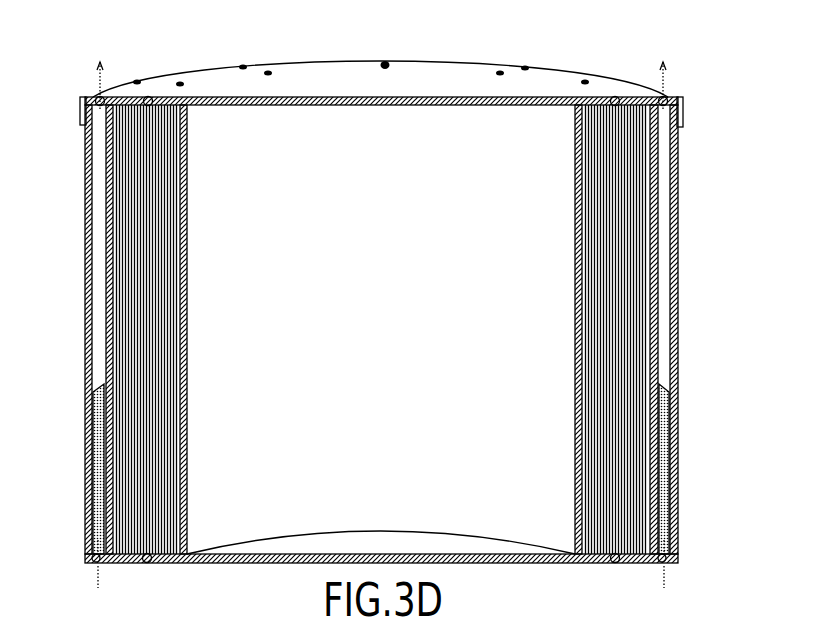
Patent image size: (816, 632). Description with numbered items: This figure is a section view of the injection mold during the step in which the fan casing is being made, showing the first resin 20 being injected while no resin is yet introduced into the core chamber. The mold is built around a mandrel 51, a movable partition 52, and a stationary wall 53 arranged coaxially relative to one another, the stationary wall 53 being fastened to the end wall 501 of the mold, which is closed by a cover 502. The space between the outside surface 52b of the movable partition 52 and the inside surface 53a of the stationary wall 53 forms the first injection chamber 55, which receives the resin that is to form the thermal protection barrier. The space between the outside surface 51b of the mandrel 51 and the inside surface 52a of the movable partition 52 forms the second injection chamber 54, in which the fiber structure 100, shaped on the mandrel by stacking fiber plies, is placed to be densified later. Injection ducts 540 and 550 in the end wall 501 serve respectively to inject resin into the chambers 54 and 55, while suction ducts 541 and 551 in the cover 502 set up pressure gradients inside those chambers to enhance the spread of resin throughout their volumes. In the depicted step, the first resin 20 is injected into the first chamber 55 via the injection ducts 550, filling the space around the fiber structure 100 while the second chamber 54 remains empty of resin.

The first resin 20 is at (100, 470).
The mandrel 51 is at (258, 527).
The outside surface of the mandrel 51b is at (167, 242).
The movable partition 52 is at (655, 192).
The inside surface of the movable partition 52a is at (120, 190).
The outside surface of the movable partition 52b is at (662, 133).
The stationary wall 53 is at (676, 366).
The inside surface of the stationary wall 53a is at (662, 322).
The second injection chamber 54 is at (146, 261).
The first injection chamber 55 is at (98, 318).
The fiber structure 100 is at (637, 277).
The end wall 501 is at (492, 565).
The cover 502 is at (460, 77).
The injection ducts 540 is at (148, 564).
The suction ducts 541 is at (180, 82).
The injection ducts 550 is at (90, 561).
The suction ducts 551 is at (95, 97).